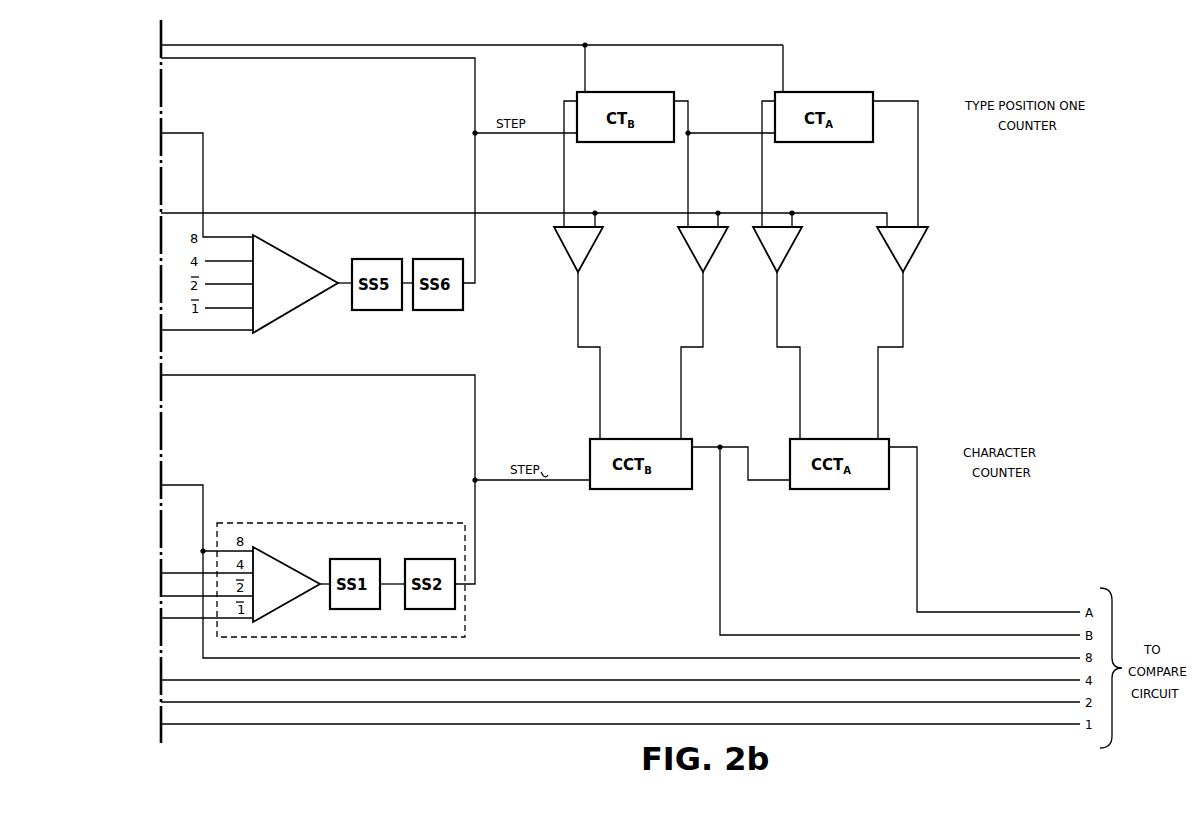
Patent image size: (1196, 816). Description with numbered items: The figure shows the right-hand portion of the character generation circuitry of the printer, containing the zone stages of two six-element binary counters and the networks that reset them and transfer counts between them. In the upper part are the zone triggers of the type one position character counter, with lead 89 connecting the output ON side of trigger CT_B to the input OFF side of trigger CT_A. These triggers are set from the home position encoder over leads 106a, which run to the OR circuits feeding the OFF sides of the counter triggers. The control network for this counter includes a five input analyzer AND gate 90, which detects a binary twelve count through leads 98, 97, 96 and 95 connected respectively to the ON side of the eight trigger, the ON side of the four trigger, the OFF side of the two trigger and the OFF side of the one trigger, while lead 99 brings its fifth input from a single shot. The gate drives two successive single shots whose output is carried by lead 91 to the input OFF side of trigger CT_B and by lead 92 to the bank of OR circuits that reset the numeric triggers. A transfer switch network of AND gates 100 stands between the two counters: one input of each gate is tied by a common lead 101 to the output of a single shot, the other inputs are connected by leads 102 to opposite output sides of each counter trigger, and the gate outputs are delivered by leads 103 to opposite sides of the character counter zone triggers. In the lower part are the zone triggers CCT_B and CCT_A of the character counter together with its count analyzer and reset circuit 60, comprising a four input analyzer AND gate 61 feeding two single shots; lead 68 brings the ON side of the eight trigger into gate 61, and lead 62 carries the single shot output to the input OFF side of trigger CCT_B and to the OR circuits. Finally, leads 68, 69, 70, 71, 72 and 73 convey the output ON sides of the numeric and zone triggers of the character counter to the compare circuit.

The lead 92 is at (420, 64).
The leads 106a is at (584, 75).
The lead 89 is at (735, 128).
The leads 102 is at (563, 173).
The common lead 101 is at (334, 214).
The AND gates 100 is at (590, 247).
The leads 103 is at (576, 315).
The analyzer AND gate 90 is at (268, 248).
The lead 98 is at (218, 236).
The lead 97 is at (244, 262).
The lead 96 is at (244, 285).
The lead 95 is at (244, 308).
The lead 99 is at (245, 332).
The lead 91 is at (475, 253).
The lead 68 is at (200, 489).
The count analyzer and reset circuit 60 is at (300, 524).
The analyzer AND gate 61 is at (276, 566).
The lead 62 is at (475, 515).
The lead 72 is at (720, 515).
The lead 73 is at (917, 515).
The lead 71 is at (200, 679).
The lead 70 is at (279, 702).
The lead 69 is at (327, 724).